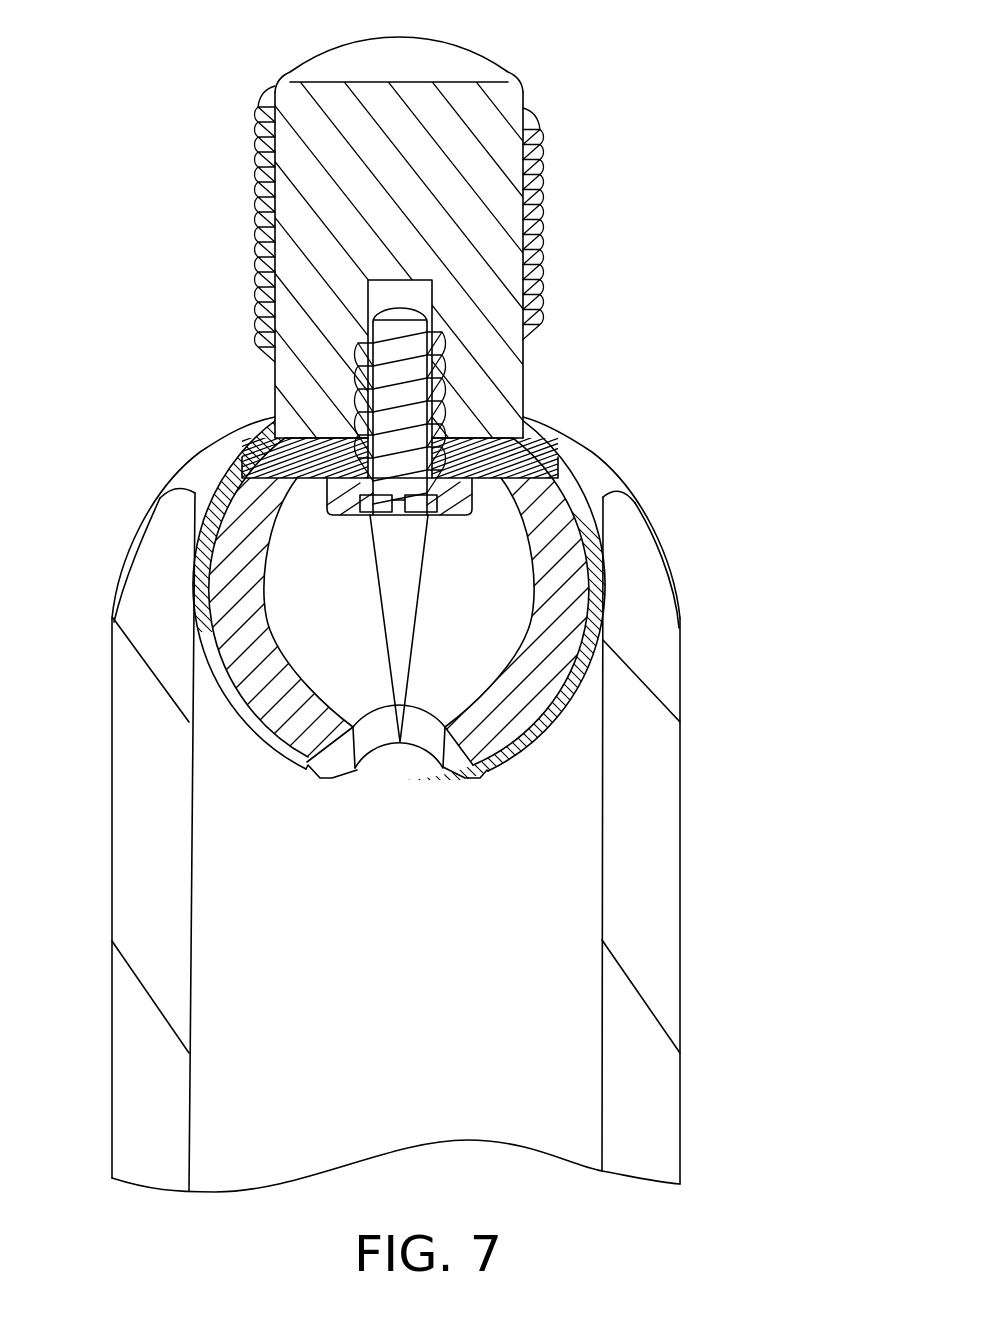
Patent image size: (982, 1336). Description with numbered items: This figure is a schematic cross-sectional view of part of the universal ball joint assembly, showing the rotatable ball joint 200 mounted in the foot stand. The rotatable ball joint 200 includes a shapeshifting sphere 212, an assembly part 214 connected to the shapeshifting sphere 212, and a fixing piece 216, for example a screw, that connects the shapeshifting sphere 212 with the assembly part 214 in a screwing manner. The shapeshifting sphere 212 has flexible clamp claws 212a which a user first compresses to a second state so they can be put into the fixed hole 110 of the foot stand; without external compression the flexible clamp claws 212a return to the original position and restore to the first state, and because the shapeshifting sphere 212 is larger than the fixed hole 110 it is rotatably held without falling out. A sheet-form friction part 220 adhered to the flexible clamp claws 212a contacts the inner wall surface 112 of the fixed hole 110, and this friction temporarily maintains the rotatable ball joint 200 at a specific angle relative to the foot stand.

The rotatable ball joint 200 is at (652, 50).
The fixed hole 110 is at (204, 653).
The inner wall surface 112 is at (206, 494).
The shapeshifting sphere 212 is at (426, 600).
The flexible clamp claws 212a is at (303, 717).
The assembly part 214 is at (500, 212).
The fixing piece 216 is at (458, 492).
The friction part 220 is at (277, 738).